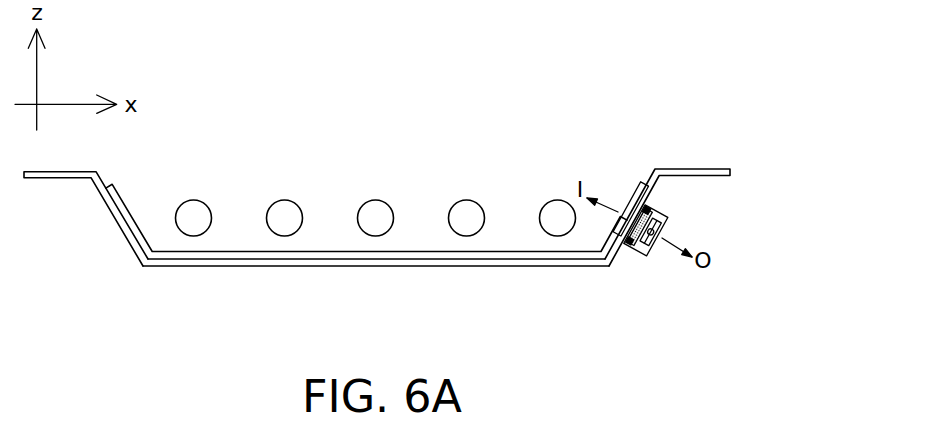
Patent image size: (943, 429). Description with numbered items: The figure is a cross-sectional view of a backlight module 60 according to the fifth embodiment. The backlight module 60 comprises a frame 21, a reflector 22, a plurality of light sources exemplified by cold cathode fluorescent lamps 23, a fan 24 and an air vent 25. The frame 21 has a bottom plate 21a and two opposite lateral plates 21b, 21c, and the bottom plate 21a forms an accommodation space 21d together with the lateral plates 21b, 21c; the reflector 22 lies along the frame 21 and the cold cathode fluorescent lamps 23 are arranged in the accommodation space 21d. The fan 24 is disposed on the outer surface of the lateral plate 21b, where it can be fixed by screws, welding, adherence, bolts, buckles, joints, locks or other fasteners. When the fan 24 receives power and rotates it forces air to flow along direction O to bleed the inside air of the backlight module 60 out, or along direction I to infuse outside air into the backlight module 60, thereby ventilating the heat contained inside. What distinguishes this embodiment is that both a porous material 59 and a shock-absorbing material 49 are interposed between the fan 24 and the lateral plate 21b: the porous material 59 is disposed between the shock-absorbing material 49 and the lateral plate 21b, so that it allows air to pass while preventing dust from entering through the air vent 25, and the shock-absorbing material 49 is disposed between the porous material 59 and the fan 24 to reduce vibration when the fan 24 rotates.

The backlight module 60 is at (726, 30).
The frame 21 is at (422, 214).
The bottom plate 21a is at (407, 262).
The lateral plate 21b is at (662, 180).
The lateral plate 21c is at (118, 220).
The accommodation space 21d is at (325, 222).
The reflector 22 is at (468, 253).
The cold cathode fluorescent lamps 23 is at (374, 210).
The fan 24 is at (644, 262).
The air vent 25 is at (626, 203).
The shock-absorbing material 49 is at (632, 248).
The porous material 59 is at (627, 248).